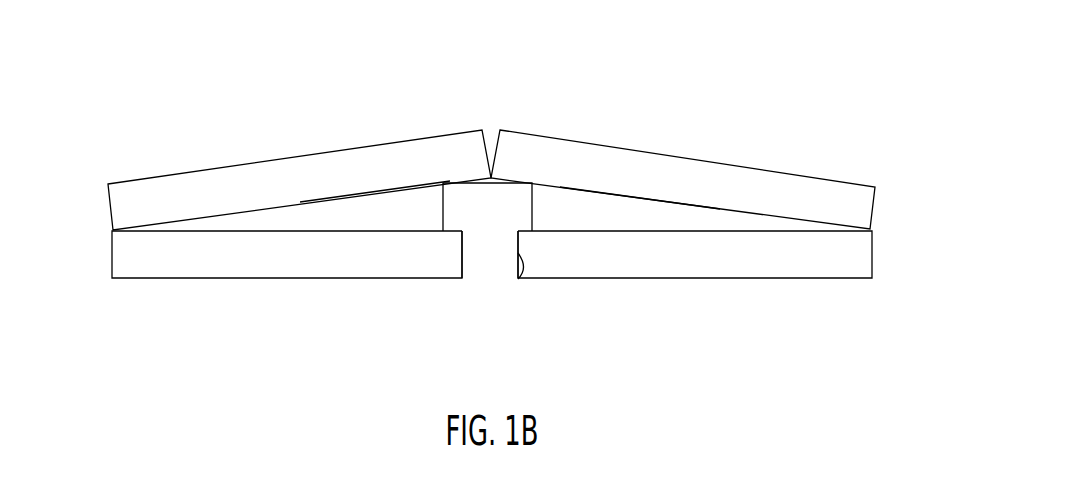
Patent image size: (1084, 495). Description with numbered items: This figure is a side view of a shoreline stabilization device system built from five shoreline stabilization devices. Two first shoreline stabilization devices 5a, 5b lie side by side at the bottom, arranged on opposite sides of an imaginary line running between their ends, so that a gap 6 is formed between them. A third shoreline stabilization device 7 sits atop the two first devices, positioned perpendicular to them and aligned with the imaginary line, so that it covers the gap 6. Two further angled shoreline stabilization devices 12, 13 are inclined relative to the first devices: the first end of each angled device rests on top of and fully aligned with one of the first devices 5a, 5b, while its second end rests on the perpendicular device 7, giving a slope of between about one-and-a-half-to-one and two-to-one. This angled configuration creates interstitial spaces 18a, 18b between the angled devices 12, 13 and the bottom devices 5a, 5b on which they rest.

The first shoreline stabilization device 5a is at (315, 248).
The first shoreline stabilization device 5b is at (615, 253).
The gap 6 is at (462, 260).
The third shoreline stabilization device 7 is at (477, 198).
The angled shoreline stabilization device 12 is at (321, 174).
The angled shoreline stabilization device 13 is at (632, 163).
The interstitial space 18a is at (395, 215).
The interstitial space 18b is at (640, 217).